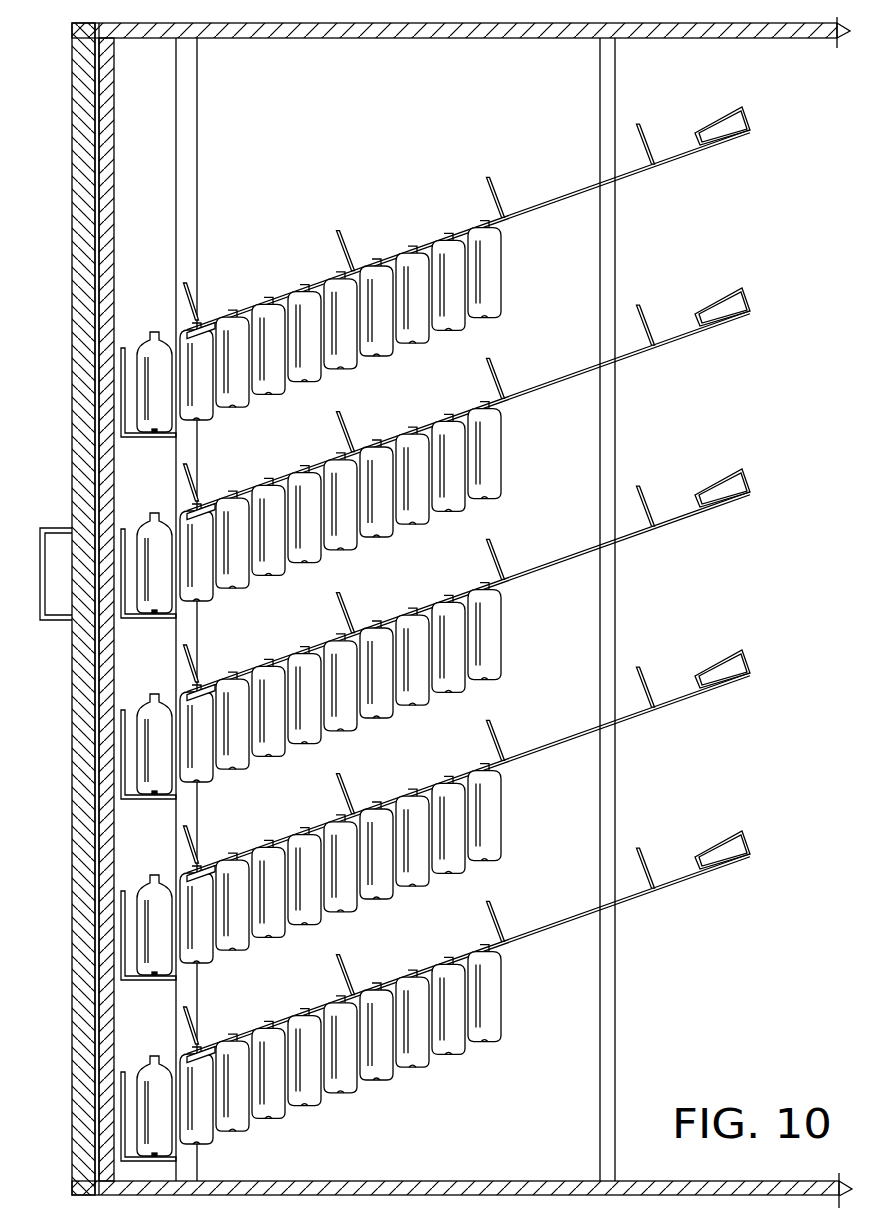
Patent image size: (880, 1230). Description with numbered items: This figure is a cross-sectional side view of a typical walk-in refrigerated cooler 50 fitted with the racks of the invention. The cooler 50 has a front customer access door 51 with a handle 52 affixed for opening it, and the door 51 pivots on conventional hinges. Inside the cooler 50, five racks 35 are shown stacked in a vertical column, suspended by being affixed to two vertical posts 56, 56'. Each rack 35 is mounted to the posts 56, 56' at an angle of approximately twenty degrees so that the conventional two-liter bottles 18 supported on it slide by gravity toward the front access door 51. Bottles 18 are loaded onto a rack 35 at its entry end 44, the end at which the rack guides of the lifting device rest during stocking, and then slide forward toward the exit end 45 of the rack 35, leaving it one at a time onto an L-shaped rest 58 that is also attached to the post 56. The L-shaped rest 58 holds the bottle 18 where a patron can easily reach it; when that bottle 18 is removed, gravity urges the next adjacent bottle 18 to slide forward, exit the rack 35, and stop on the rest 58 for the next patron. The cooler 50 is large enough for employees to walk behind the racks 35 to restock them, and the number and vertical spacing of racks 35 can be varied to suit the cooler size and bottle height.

The refrigerated cooler 50 is at (67, 128).
The front customer access door 51 is at (70, 258).
The handle 52 is at (55, 527).
The vertical post 56 is at (222, 609).
The vertical post 56' is at (567, 609).
The L-shaped rest 58 is at (163, 437).
The bottle 18 is at (152, 330).
The exit end 45 is at (221, 300).
The entry end 44 is at (688, 105).
The rack 35 is at (750, 128).